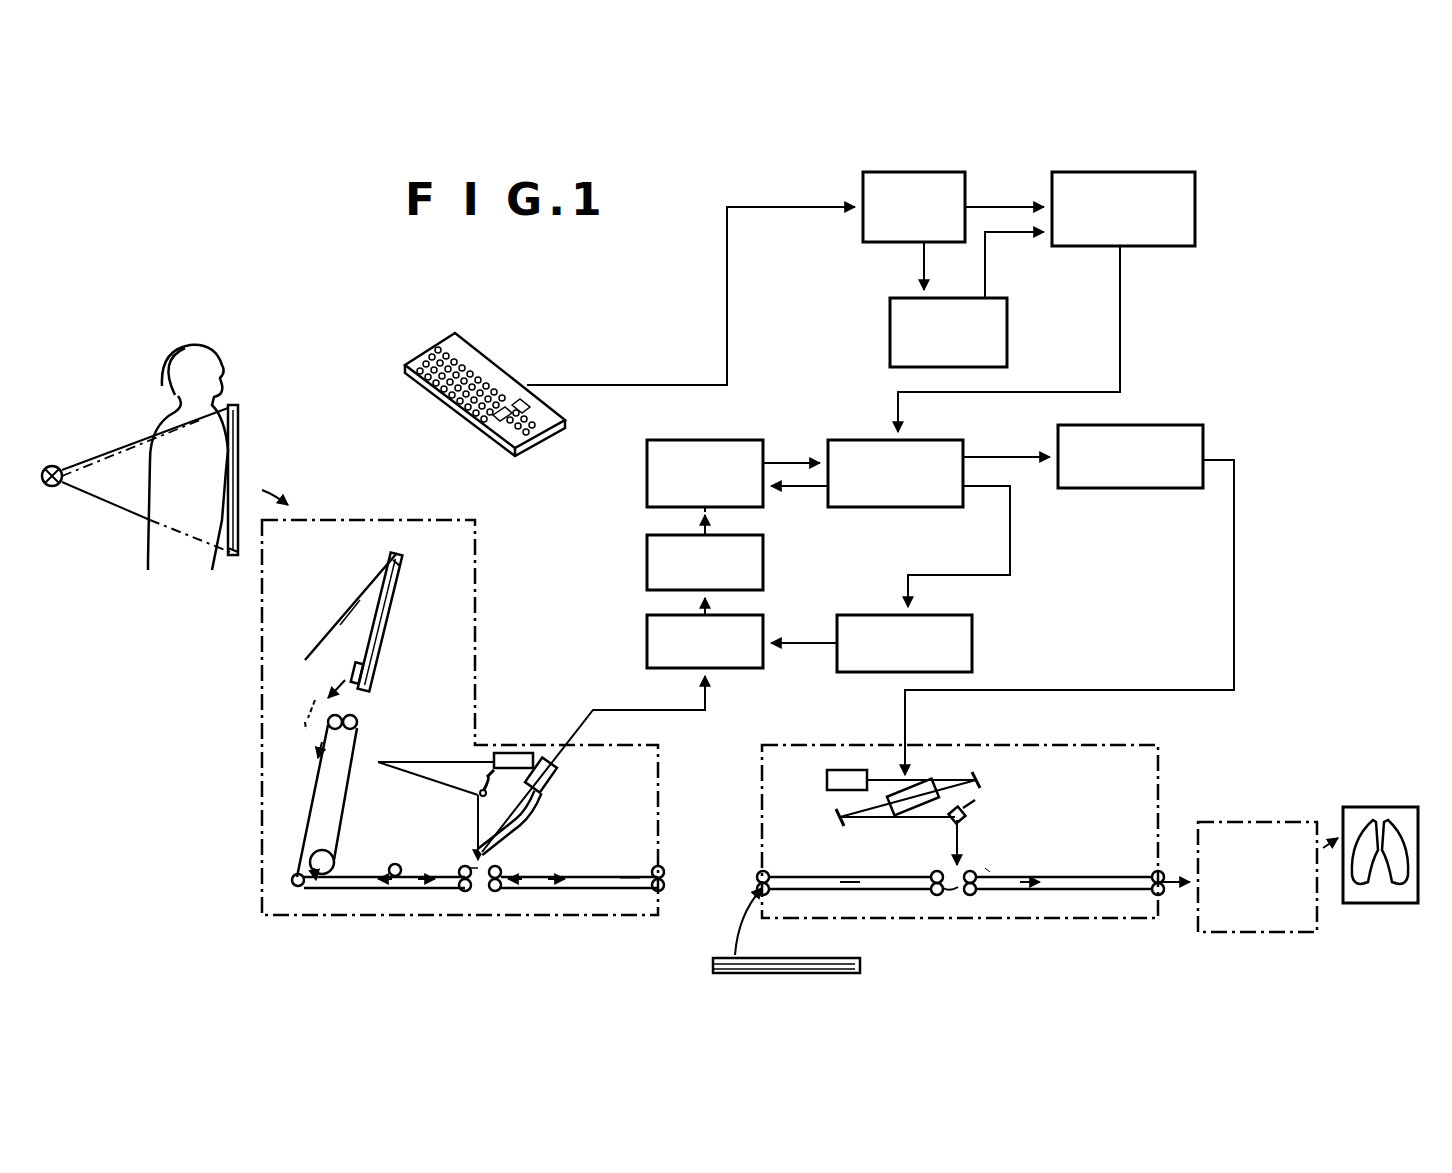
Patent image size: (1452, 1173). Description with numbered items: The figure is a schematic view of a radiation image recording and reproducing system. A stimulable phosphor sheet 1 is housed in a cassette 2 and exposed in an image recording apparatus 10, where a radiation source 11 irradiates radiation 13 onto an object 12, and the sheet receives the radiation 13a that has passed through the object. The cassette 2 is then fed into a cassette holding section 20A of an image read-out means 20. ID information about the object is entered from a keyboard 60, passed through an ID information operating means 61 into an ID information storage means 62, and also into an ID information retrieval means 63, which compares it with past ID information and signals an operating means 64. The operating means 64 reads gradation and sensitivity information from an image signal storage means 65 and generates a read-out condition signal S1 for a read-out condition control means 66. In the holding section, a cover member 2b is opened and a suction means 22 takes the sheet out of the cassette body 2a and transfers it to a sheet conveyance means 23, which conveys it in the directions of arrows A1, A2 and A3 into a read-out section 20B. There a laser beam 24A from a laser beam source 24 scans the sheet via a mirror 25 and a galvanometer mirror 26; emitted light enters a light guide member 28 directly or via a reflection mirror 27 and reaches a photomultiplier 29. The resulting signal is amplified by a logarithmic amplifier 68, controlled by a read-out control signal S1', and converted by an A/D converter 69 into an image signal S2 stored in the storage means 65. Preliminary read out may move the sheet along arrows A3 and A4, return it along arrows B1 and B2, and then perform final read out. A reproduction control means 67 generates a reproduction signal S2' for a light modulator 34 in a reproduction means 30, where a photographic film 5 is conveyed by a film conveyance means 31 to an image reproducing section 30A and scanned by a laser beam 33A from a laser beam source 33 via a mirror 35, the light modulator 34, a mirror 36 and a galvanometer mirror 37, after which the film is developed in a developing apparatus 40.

The stimulable phosphor sheet 1 is at (240, 430).
The cassette 2 is at (240, 405).
The cassette body 2a is at (405, 570).
The cover member 2b is at (315, 648).
The photographic film 5 is at (842, 958).
The image recording apparatus 10 is at (146, 352).
The radiation source 11 is at (52, 486).
The object 12 is at (208, 368).
The radiation 13 is at (110, 505).
The radiation which has passed through the object 13a is at (218, 555).
The image read-out means 20 is at (434, 518).
The cassette holding section 20A is at (355, 580).
The read-out section 20B is at (522, 862).
The suction means 22 is at (352, 668).
The sheet conveyance means 23 is at (356, 725).
The laser beam source 24 is at (494, 768).
The laser beam 24A is at (440, 785).
The mirror 25 is at (382, 762).
The galvanometer mirror 26 is at (480, 803).
The reflection mirror 27 is at (462, 852).
The light guide member 28 is at (545, 820).
The photomultiplier 29 is at (560, 782).
The reproduction means 30 is at (1068, 745).
The image reproducing section 30A is at (988, 862).
The film conveyance means 31 is at (918, 895).
The laser beam source 33 is at (827, 781).
The laser beam 33A is at (940, 775).
The light modulator 34 is at (968, 810).
The mirror 35 is at (985, 778).
The mirror 36 is at (836, 820).
The galvanometer mirror 37 is at (965, 822).
The developing apparatus 40 is at (1258, 822).
The keyboard 60 is at (465, 348).
The ID information operating means 61 is at (948, 172).
The ID information storage means 62 is at (1007, 335).
The ID information retrieval means 63 is at (1166, 172).
The operating means 64 is at (940, 440).
The image signal storage means 65 is at (647, 470).
The read-out condition control means 66 is at (972, 640).
The reproduction control means 67 is at (1178, 425).
The logarithmic amplifier 68 is at (647, 634).
The A/D converter 69 is at (647, 566).
The arrow A1 is at (322, 760).
The arrow A2 is at (300, 890).
The arrow A3 is at (423, 892).
The arrow A4 is at (550, 892).
The arrow B1 is at (515, 892).
The arrow B2 is at (386, 895).
The read-out condition signal S1 is at (959, 546).
The read-out control signal S1' is at (814, 604).
The image signal S2 is at (835, 495).
The reproduction signal S2' is at (1102, 617).